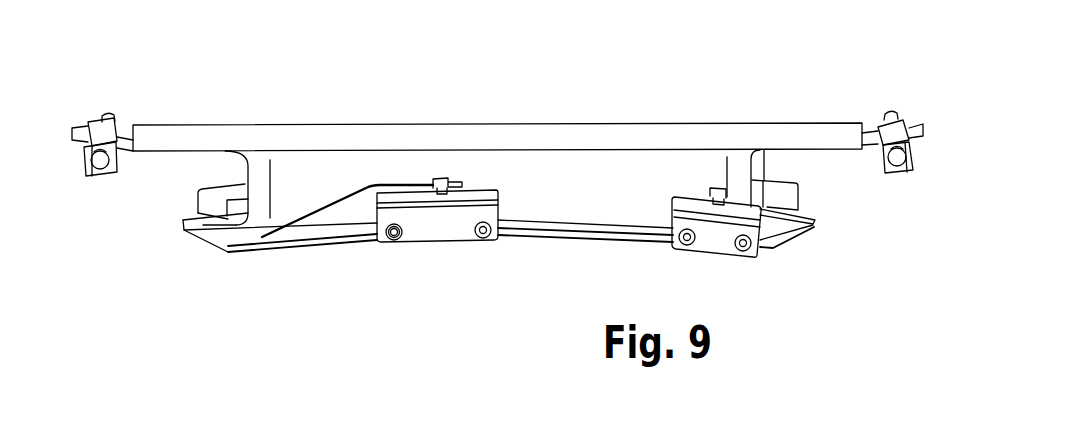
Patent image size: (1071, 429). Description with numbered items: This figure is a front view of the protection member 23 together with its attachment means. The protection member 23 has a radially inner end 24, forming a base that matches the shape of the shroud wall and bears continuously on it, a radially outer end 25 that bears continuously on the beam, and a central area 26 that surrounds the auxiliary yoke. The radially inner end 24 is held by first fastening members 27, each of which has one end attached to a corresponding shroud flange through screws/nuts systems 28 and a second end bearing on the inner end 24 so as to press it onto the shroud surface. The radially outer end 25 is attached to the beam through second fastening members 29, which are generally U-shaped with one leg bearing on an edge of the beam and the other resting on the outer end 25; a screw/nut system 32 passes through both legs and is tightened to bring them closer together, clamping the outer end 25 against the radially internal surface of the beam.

The protection member 23 is at (813, 265).
The radially inner end 24 is at (210, 229).
The radially outer end 25 is at (587, 135).
The central area 26 is at (757, 171).
The first fastening members 27 is at (790, 197).
The screws/nuts systems 28 is at (400, 238).
The second fastening members 29 is at (97, 128).
The screw/nut system 32 is at (105, 118).